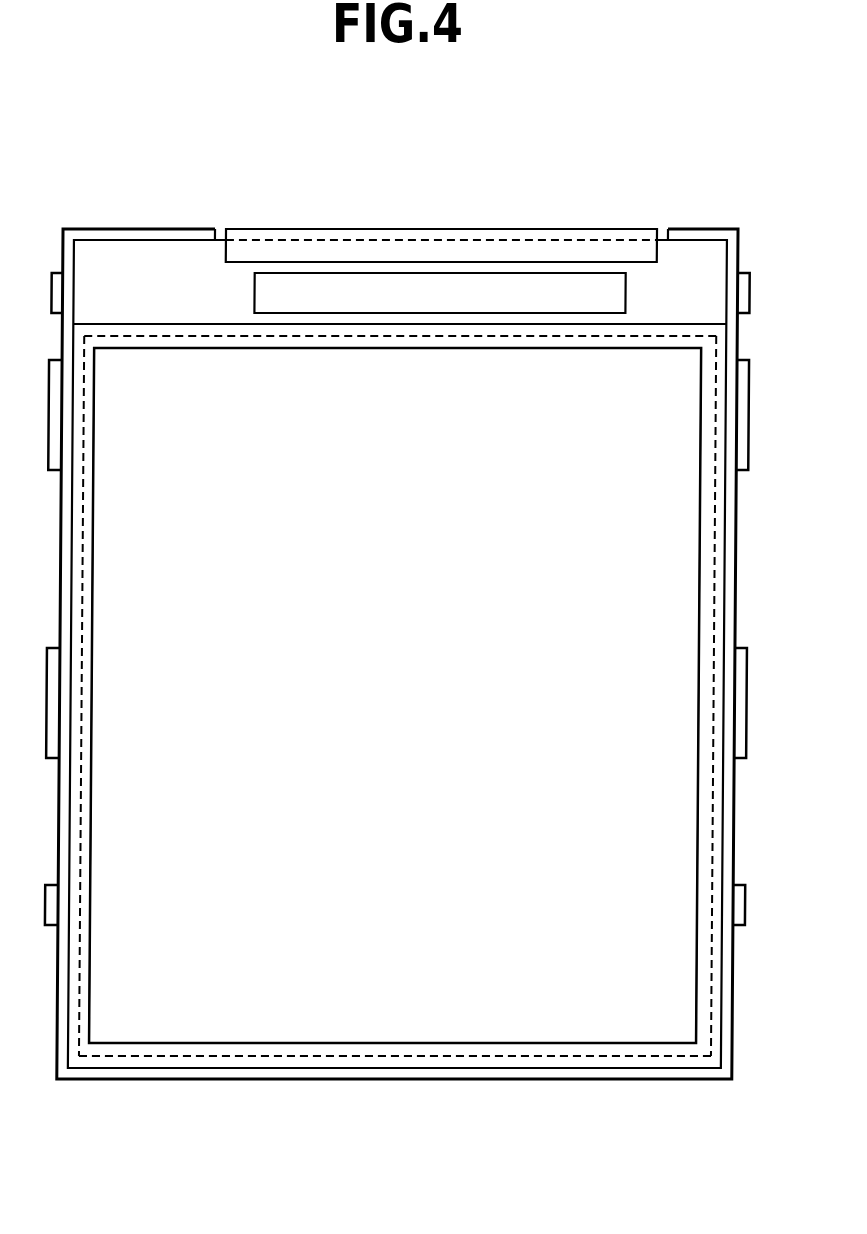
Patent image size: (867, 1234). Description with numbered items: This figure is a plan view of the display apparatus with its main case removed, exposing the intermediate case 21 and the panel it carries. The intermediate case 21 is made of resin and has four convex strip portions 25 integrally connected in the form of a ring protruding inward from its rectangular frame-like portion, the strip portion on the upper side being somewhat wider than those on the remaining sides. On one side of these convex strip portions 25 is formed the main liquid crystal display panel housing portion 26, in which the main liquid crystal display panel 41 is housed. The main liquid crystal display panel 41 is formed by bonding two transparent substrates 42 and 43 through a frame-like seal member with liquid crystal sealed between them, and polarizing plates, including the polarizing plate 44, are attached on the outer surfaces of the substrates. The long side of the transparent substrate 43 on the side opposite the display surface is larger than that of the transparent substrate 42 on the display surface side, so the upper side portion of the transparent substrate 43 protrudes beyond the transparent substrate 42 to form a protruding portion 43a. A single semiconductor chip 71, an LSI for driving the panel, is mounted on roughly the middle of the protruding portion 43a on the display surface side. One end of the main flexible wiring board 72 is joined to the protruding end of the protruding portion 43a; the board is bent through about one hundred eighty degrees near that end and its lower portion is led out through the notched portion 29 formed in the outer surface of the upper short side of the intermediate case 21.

The intermediate case 21 is at (705, 223).
The convex strip portion 25 is at (254, 335).
The main liquid crystal display panel housing portion 26 is at (294, 1067).
The notched portion 29 is at (218, 228).
The main liquid crystal display panel 41 is at (472, 1030).
The transparent substrate 42 is at (621, 1062).
The transparent substrate 43 is at (100, 258).
The protruding portion 43a is at (172, 257).
The polarizing plate 44 is at (559, 1037).
The semiconductor chip 71 is at (528, 293).
The main flexible wiring board 72 is at (364, 222).